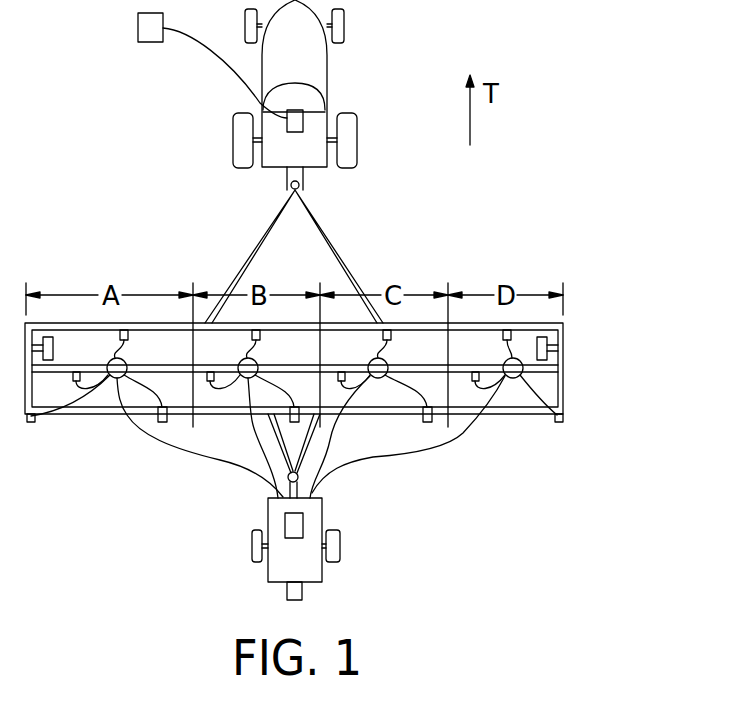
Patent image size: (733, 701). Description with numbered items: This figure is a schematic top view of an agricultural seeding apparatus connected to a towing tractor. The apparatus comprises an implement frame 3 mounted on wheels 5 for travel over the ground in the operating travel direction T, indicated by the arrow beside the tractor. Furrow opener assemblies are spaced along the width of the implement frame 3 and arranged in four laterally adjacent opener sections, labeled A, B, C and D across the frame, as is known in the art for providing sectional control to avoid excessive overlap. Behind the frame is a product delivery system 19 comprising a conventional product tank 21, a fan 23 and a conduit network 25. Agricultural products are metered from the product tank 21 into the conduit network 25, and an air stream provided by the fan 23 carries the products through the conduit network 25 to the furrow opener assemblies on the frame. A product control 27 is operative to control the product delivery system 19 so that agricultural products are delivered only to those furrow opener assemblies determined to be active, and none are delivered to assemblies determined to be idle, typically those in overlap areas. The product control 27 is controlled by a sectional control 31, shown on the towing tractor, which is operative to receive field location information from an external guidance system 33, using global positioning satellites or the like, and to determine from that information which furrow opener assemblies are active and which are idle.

The implement frame 3 is at (540, 417).
The wheels 5 is at (547, 345).
The product delivery system 19 is at (425, 540).
The product tank 21 is at (322, 571).
The fan 23 is at (287, 593).
The conduit network 25 is at (217, 457).
The product control 27 is at (303, 528).
The sectional control 31 is at (303, 115).
The external guidance system 33 is at (138, 19).